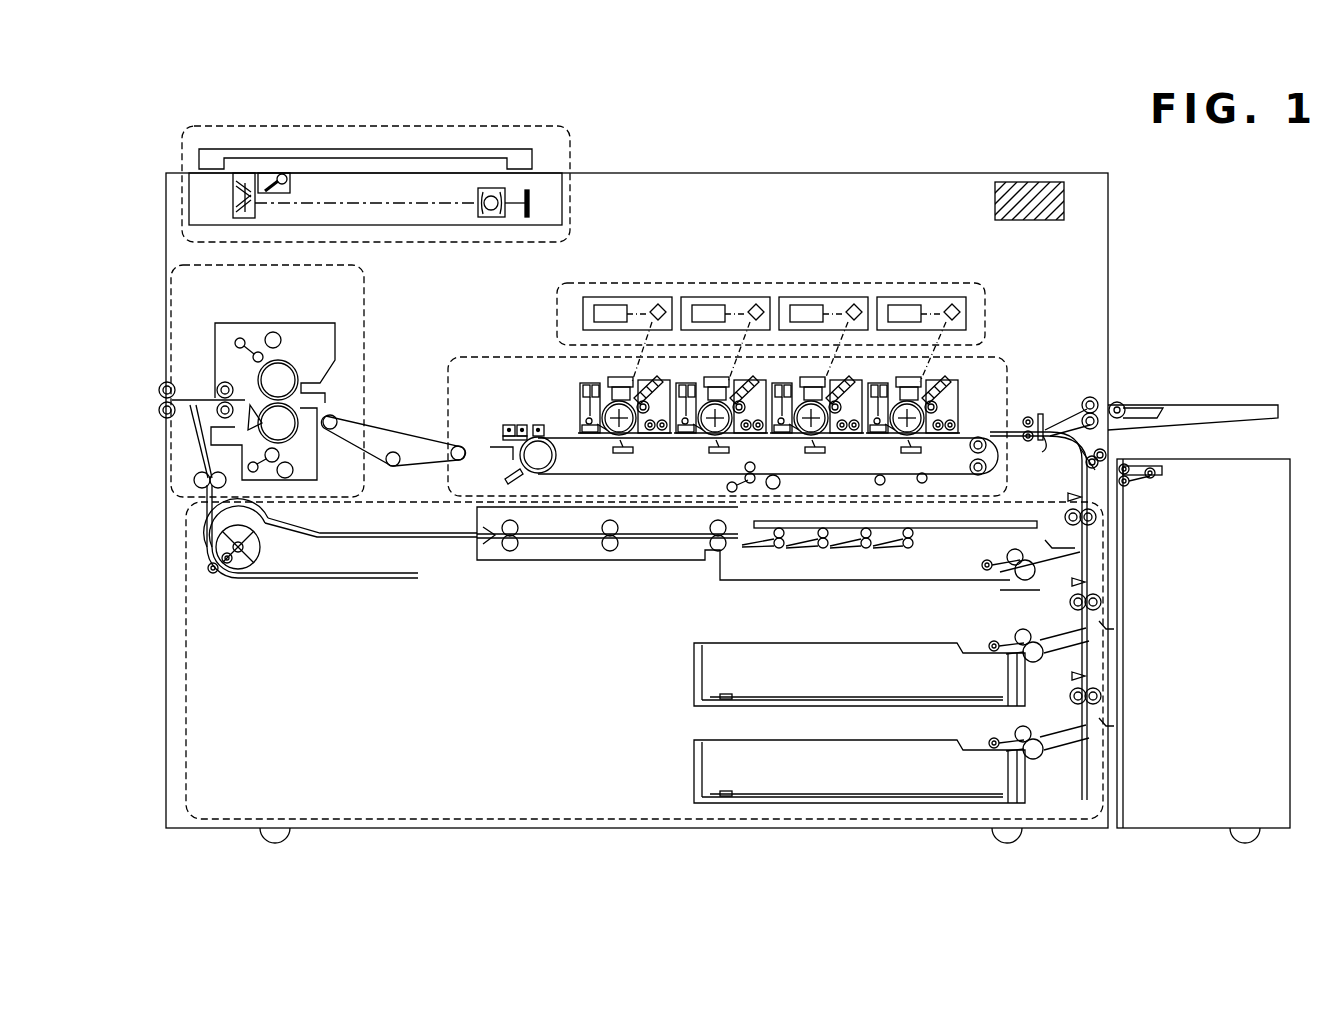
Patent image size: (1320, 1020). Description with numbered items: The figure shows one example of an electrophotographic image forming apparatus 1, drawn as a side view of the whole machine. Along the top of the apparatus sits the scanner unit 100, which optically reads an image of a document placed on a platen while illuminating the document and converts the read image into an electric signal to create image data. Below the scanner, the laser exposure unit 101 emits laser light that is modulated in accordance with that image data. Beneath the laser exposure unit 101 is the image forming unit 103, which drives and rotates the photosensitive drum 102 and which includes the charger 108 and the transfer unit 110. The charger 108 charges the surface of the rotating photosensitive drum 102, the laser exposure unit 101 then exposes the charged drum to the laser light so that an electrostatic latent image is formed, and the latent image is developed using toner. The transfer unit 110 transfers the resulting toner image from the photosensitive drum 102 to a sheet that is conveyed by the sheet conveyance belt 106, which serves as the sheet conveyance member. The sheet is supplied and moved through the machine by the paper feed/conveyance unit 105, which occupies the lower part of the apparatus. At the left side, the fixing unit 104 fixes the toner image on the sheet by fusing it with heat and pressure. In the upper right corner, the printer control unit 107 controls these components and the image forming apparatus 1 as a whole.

The image forming apparatus 1 is at (998, 157).
The scanner unit 100 is at (560, 127).
The laser exposure unit 101 is at (762, 283).
The photosensitive drum 102 is at (606, 392).
The image forming unit 103 is at (440, 415).
The fixing unit 104 is at (364, 290).
The paper feed/conveyance unit 105 is at (538, 819).
The sheet conveyance belt 106 is at (524, 436).
The printer control unit 107 is at (1066, 200).
The charger 108 is at (620, 380).
The transfer unit 110 is at (612, 455).